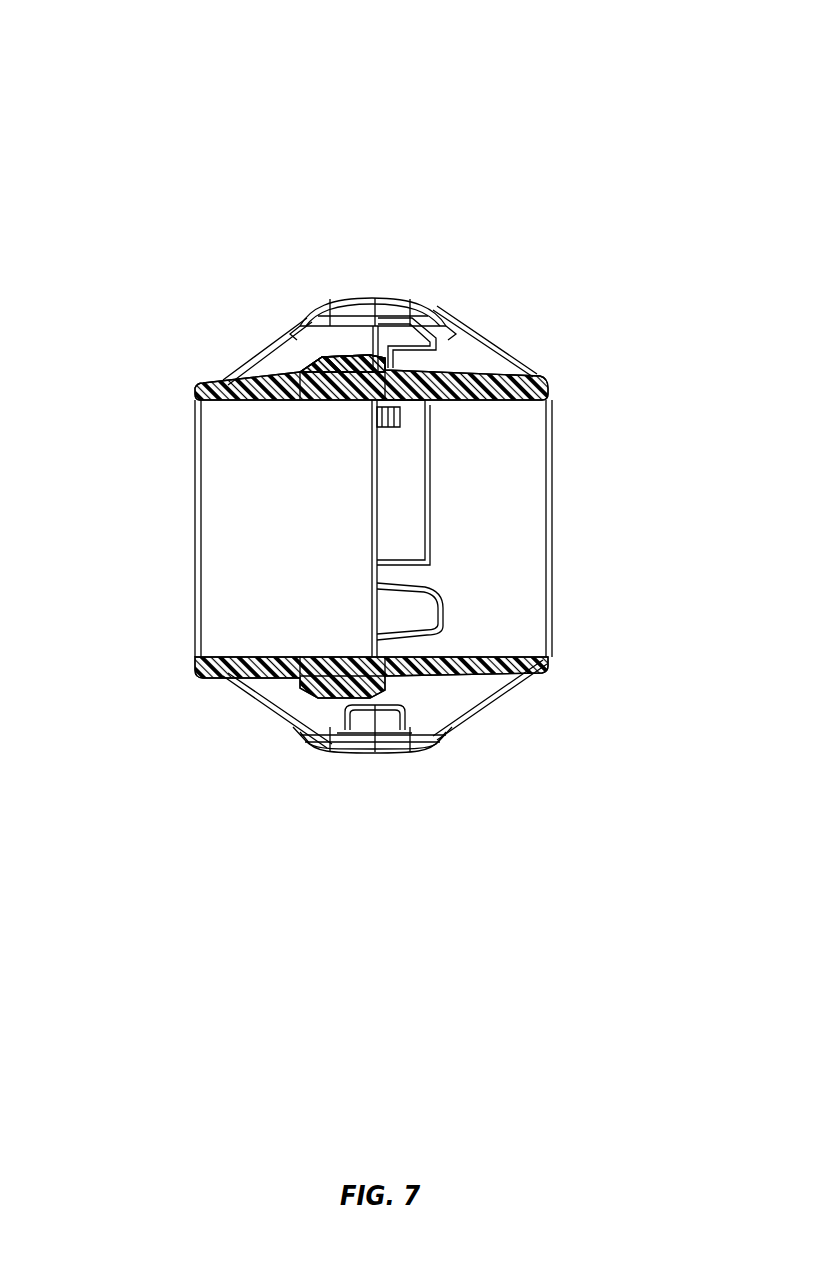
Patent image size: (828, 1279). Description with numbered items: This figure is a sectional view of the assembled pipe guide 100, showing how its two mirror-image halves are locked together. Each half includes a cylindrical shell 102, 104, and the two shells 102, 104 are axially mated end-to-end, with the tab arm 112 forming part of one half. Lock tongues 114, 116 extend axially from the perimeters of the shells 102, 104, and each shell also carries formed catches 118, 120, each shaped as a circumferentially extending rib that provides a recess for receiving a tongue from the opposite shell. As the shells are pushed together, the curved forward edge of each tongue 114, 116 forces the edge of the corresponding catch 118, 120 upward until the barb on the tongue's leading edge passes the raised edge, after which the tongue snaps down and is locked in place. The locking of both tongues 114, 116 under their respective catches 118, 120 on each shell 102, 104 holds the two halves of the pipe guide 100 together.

The pipe guide 100 is at (352, 63).
The cylindrical shell 102 is at (195, 526).
The cylindrical shell 104 is at (553, 526).
The tab arm 112 is at (420, 345).
The lock tongue 114 is at (307, 688).
The lock tongue 116 is at (300, 363).
The catch 118 is at (340, 352).
The catch 120 is at (320, 712).